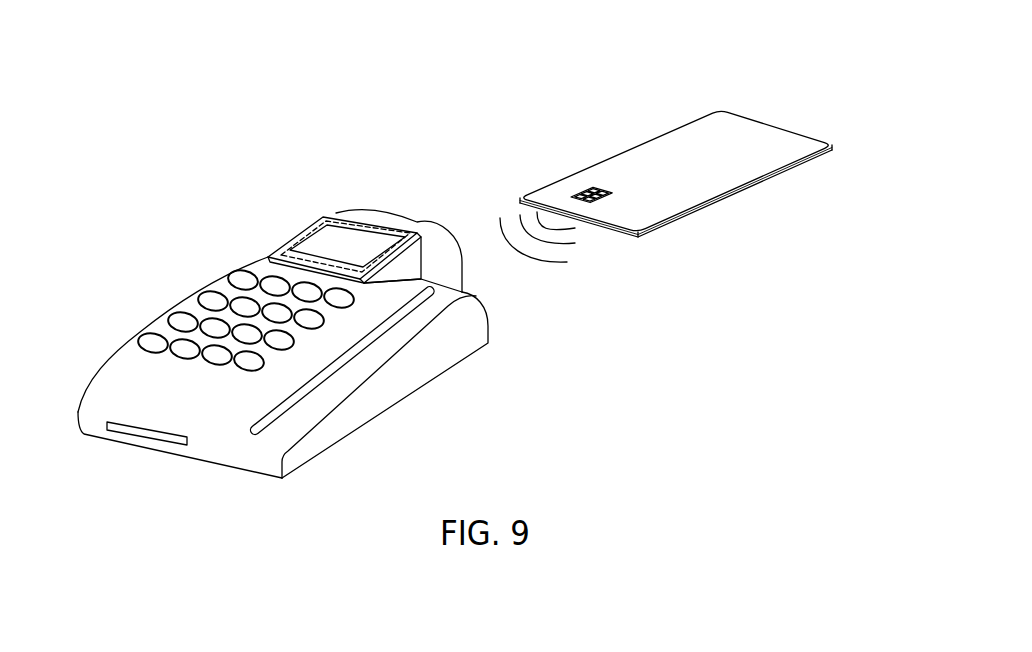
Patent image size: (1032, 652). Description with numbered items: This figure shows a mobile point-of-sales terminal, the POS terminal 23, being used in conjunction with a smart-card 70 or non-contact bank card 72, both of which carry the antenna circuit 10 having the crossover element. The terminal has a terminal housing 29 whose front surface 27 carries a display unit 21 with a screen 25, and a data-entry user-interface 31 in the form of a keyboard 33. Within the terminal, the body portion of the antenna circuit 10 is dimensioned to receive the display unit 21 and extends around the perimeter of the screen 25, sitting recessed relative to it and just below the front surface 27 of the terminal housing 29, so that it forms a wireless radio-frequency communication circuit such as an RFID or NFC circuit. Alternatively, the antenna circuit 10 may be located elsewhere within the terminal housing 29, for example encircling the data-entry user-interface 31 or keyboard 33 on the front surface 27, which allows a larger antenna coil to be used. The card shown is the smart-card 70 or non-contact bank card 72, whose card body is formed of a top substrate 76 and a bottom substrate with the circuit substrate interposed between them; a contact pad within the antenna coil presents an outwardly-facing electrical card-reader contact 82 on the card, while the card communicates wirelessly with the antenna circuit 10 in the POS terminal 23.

The antenna circuit 10 is at (300, 228).
The display unit 21 is at (322, 238).
The POS terminal 23 is at (205, 245).
The screen 25 is at (348, 245).
The front surface 27 is at (160, 327).
The terminal housing 29 is at (395, 372).
The data-entry user-interface 31 is at (207, 297).
The keyboard 33 is at (175, 305).
The smart-card 70 is at (659, 140).
The non-contact bank card 72 is at (652, 172).
The top substrate 76 is at (643, 158).
The electrical card-reader contact 82 is at (580, 193).